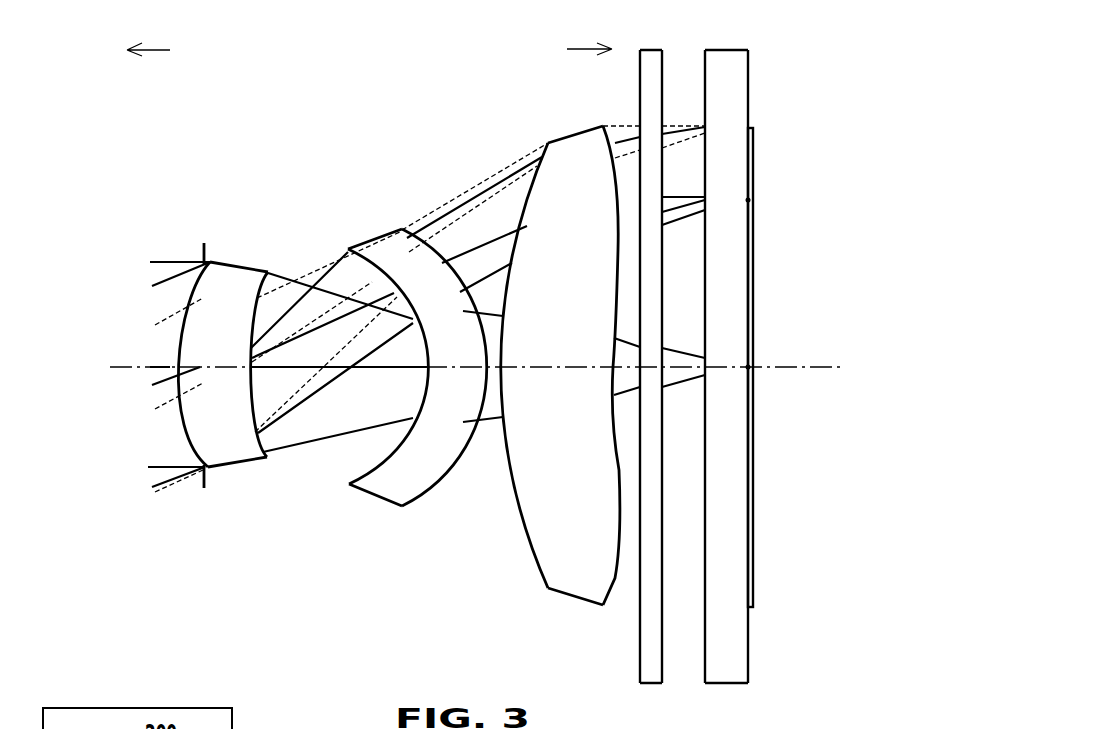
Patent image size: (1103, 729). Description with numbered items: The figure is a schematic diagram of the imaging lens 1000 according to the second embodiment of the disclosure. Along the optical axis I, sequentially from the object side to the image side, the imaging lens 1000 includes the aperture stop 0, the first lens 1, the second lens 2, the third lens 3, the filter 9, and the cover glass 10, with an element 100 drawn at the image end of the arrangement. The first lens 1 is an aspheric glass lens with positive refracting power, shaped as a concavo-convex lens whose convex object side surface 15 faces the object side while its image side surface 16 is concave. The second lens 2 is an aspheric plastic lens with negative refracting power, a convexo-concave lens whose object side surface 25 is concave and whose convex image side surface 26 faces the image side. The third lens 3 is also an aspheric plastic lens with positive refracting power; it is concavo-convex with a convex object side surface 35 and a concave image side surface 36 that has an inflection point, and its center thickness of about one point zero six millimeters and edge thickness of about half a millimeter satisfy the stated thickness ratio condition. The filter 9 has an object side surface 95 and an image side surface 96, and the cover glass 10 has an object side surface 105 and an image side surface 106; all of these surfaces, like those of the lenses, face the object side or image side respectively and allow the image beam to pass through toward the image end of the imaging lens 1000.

The imaging lens 1000 is at (142, 110).
The aperture stop 0 is at (203, 250).
The first lens 1 is at (243, 263).
The object side surface 15 is at (187, 445).
The image side surface 16 is at (268, 458).
The second lens 2 is at (372, 236).
The object side surface 25 is at (360, 468).
The image side surface 26 is at (412, 489).
The third lens 3 is at (577, 134).
The object side surface 35 is at (548, 582).
The image side surface 36 is at (615, 580).
The filter 9 is at (647, 50).
The object side surface 95 is at (640, 667).
The image side surface 96 is at (662, 672).
The cover glass 10 is at (722, 48).
The object side surface 105 is at (705, 670).
The image side surface 106 is at (748, 672).
The image plane 100 is at (753, 603).
The optical axis I is at (138, 365).